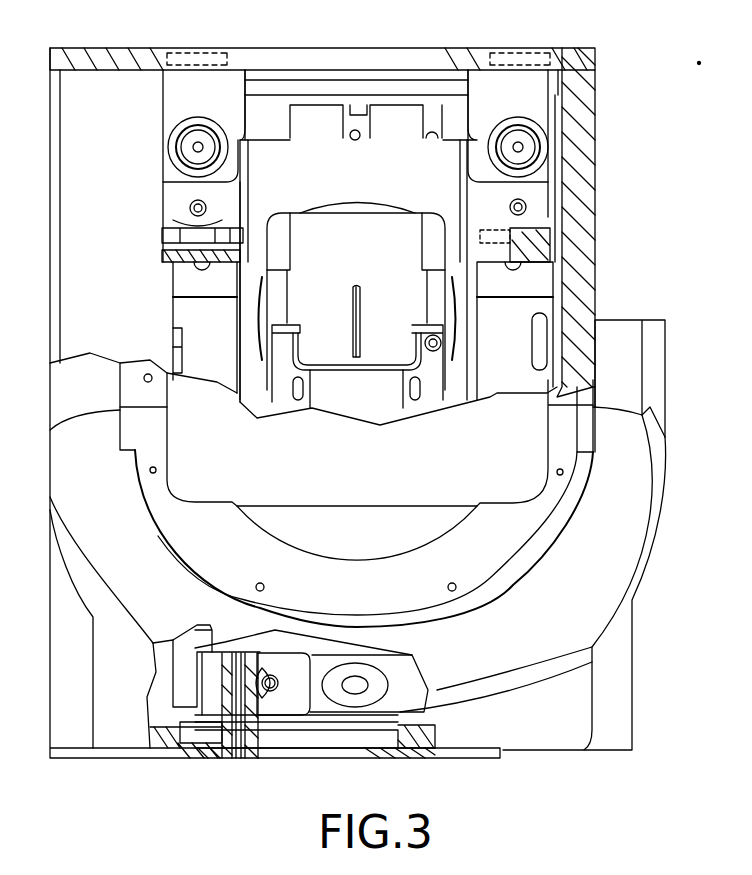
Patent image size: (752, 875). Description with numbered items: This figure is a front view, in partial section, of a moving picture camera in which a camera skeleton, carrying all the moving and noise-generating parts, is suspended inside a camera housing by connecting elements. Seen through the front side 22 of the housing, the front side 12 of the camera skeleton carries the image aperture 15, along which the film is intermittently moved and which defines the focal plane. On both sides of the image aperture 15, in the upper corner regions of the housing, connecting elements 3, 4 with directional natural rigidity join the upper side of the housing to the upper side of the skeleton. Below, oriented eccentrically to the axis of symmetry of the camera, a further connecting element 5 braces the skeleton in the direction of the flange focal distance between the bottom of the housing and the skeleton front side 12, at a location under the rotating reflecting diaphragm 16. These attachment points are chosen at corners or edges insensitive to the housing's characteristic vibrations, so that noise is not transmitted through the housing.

The connecting element 3 is at (537, 85).
The connecting element 4 is at (183, 82).
The connecting element 5 is at (283, 703).
The front side of the camera skeleton 12 is at (183, 308).
The image aperture 15 is at (382, 353).
The rotating reflecting diaphragm 16 is at (646, 466).
The front side of the camera housing 22 is at (583, 157).